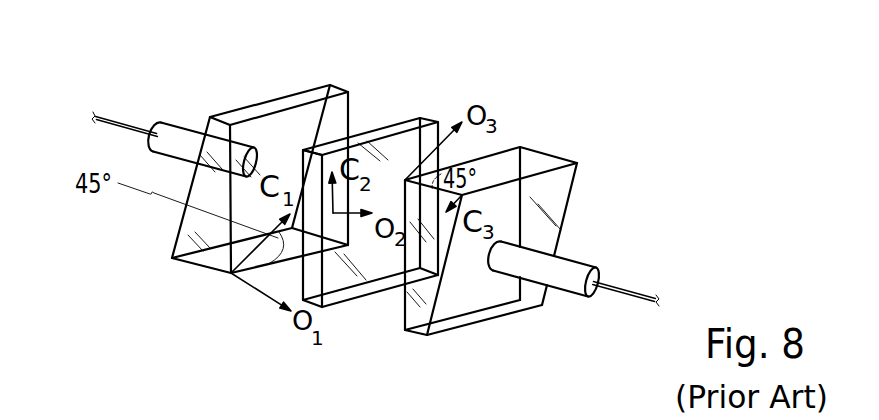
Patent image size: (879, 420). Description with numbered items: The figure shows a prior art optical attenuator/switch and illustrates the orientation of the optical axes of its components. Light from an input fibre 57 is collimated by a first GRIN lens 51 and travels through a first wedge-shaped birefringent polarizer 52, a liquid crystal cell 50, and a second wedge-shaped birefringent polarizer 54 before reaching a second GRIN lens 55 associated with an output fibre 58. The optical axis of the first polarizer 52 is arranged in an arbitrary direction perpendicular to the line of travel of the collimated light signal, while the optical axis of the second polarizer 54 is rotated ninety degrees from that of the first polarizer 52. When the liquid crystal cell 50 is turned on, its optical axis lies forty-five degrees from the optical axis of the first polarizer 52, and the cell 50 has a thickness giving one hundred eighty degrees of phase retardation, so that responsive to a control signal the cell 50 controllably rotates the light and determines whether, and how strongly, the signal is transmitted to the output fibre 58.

The liquid crystal cell 50 is at (342, 305).
The first GRIN lens 51 is at (177, 125).
The first wedge-shaped birefringent polarizer 52 is at (345, 113).
The second wedge-shaped birefringent polarizer 54 is at (560, 190).
The second GRIN lens 55 is at (577, 255).
The input fibre 57 is at (120, 122).
The output fibre 58 is at (635, 290).